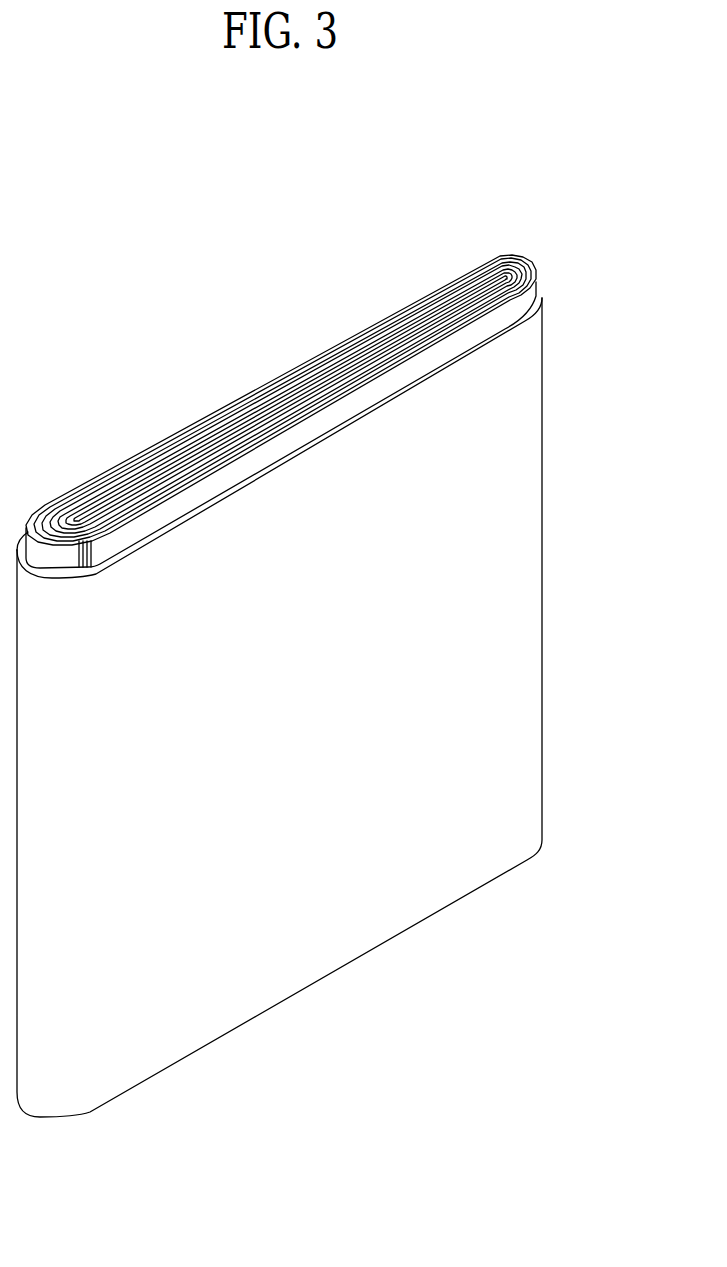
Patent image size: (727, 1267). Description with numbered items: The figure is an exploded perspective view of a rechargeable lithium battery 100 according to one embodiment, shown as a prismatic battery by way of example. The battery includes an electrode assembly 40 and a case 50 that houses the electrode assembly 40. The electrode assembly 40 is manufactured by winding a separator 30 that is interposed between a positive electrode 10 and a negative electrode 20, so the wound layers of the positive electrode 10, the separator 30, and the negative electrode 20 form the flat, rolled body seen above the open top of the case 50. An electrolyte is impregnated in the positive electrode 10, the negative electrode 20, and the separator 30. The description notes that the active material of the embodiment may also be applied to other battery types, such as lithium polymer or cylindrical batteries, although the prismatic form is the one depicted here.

The rechargeable lithium battery 100 is at (263, 171).
The positive electrode 10 is at (534, 266).
The negative electrode 20 is at (497, 261).
The separator 30 is at (521, 259).
The electrode assembly 40 is at (252, 342).
The case 50 is at (528, 556).